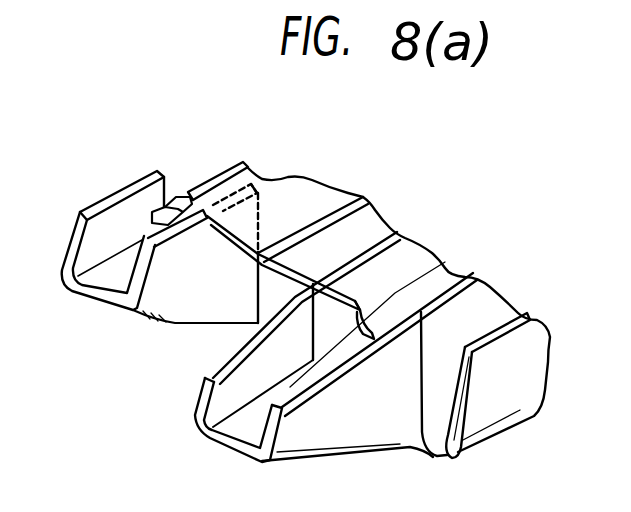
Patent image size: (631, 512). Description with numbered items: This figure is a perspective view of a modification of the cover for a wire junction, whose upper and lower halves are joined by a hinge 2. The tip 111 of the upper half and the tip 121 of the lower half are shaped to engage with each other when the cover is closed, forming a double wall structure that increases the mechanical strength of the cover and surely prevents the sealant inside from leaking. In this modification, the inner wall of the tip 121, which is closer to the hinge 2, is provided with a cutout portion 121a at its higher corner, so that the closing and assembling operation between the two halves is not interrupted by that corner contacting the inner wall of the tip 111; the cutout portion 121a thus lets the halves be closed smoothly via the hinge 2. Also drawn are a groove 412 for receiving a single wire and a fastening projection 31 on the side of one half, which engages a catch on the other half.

The hinge 2 is at (376, 221).
The tip of lower half 121 is at (110, 277).
The cutout portion 121a is at (255, 207).
The groove 412 is at (170, 205).
The tip of upper half 111 is at (248, 427).
The fastening projection 31 is at (518, 327).